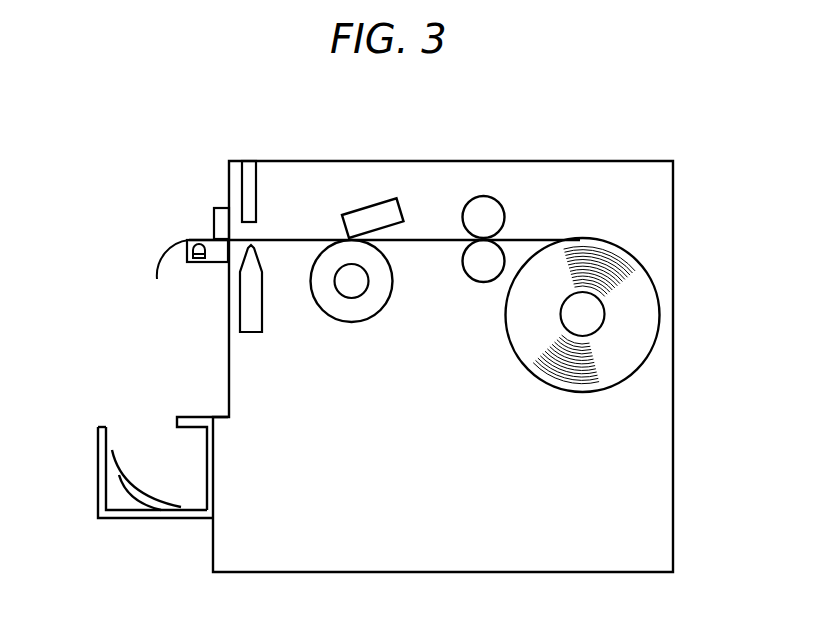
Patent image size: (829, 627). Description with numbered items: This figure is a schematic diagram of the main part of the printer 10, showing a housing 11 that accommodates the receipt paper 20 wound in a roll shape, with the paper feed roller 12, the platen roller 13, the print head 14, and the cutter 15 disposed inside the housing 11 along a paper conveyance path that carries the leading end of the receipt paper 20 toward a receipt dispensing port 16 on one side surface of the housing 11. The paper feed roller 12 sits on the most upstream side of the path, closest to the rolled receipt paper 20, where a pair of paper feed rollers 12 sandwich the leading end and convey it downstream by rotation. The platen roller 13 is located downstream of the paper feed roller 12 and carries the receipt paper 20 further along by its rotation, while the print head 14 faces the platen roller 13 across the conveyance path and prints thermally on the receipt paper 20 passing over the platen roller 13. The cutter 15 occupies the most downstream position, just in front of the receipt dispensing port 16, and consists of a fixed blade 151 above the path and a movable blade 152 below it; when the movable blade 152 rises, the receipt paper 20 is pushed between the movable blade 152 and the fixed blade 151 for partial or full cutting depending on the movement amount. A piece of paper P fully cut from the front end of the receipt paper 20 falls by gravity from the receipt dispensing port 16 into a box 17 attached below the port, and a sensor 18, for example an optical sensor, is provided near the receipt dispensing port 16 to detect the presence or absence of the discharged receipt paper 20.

The printer 10 is at (479, 330).
The housing 11 is at (673, 403).
The paper feed roller 12 is at (483, 282).
The platen roller 13 is at (352, 323).
The print head 14 is at (404, 209).
The cutter 15 is at (234, 269).
The fixed blade 151 is at (247, 179).
The movable blade 152 is at (250, 333).
The receipt dispensing port 16 is at (208, 230).
The box 17 is at (97, 455).
The sensor 18 is at (200, 262).
The receipt paper 20 is at (565, 389).
The piece of paper P is at (133, 480).